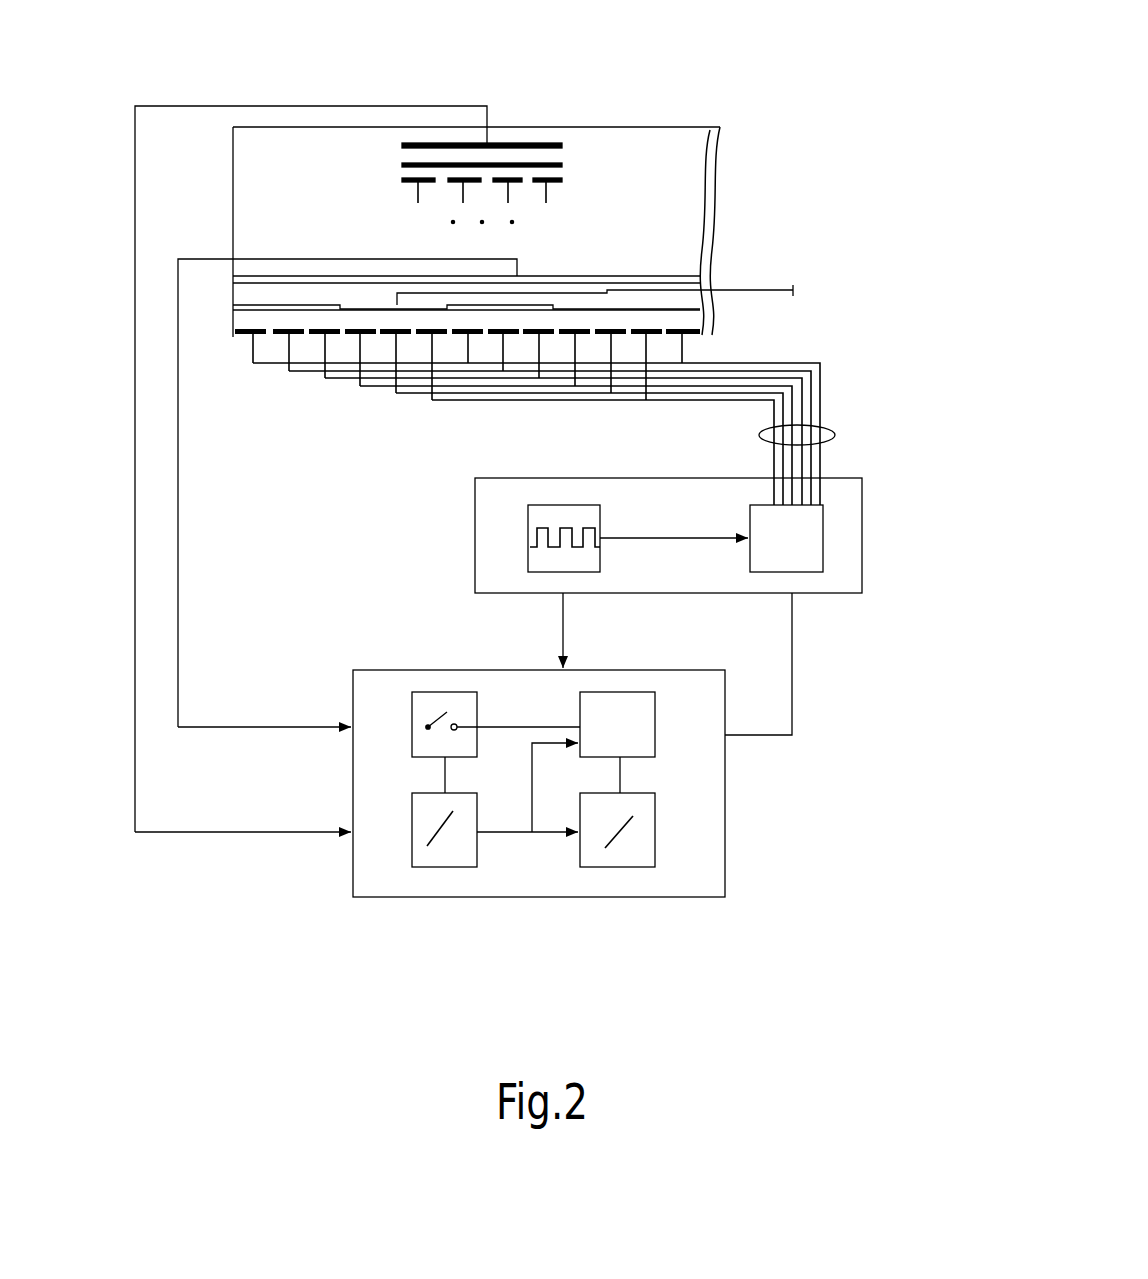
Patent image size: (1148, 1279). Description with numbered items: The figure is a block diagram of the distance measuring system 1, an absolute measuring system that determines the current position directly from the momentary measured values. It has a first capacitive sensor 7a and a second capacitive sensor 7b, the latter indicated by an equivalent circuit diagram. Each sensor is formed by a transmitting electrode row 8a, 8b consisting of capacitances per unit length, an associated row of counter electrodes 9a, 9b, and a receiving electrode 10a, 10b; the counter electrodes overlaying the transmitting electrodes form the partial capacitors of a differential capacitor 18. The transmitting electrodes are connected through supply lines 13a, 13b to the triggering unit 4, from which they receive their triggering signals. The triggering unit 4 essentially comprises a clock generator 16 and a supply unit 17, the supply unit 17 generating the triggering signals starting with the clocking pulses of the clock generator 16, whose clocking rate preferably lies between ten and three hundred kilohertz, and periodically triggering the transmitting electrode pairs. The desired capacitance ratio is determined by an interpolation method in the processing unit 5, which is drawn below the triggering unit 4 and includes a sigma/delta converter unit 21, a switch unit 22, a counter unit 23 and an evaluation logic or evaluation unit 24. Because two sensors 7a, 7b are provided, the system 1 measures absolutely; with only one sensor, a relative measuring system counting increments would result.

The distance measuring system 1 is at (837, 145).
The triggering unit 4 is at (437, 523).
The processing unit 5 is at (320, 875).
The first capacitive sensor 7a is at (662, 265).
The second capacitive sensor 7b is at (545, 122).
The transmitting electrode row 8a is at (727, 328).
The transmitting electrode row 8b is at (563, 193).
The row of counter electrodes 9a is at (723, 305).
The row of counter electrodes 9b is at (400, 165).
The receiving electrode 10a is at (687, 267).
The receiving electrode 10b is at (562, 146).
The supply lines 13a is at (827, 430).
The supply lines 13b is at (400, 208).
The clock generator 16 is at (547, 558).
The supply unit 17 is at (802, 543).
The differential capacitor 18 is at (233, 325).
The sigma/delta converter unit 21 is at (448, 863).
The switch unit 22 is at (423, 703).
The counter unit 23 is at (633, 863).
The evaluation unit 24 is at (637, 732).